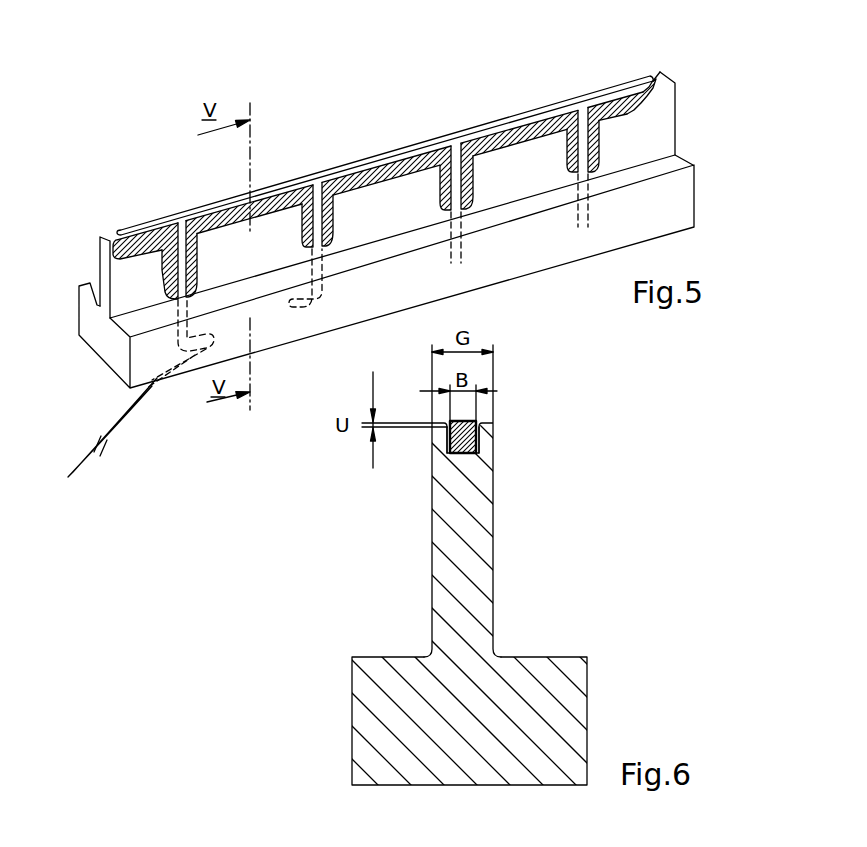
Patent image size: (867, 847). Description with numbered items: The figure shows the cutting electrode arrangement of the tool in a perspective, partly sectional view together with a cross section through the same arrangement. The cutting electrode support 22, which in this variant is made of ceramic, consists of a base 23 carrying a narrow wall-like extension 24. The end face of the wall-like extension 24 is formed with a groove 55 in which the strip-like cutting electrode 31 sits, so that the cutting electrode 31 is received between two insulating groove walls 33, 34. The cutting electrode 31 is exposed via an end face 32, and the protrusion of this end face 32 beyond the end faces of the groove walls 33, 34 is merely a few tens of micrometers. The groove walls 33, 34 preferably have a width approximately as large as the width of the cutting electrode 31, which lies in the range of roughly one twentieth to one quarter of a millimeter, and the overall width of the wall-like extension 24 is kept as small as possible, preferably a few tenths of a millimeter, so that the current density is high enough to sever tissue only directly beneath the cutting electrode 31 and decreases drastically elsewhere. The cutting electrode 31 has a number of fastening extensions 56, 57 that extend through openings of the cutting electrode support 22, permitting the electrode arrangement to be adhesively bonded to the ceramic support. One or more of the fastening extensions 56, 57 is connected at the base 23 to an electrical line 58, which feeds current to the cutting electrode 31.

In FIG. 5, the cutting electrode support 22 is at (697, 82).
In FIG. 6, the cutting electrode support 22 is at (603, 549).
In FIG. 5, the base 23 is at (386, 271).
In FIG. 6, the base 23 is at (520, 678).
In FIG. 5, the wall-like extension 24 is at (647, 132).
In FIG. 6, the wall-like extension 24 is at (463, 560).
In FIG. 5, the cutting electrode 31 is at (528, 125).
In FIG. 6, the cutting electrode 31 is at (465, 444).
In FIG. 6, the end face 32 is at (463, 420).
In FIG. 6, the groove wall 33 is at (440, 442).
In FIG. 6, the groove wall 34 is at (485, 431).
In FIG. 5, the groove 55 is at (660, 72).
In FIG. 5, the fastening extension 56 is at (186, 262).
In FIG. 5, the fastening extension 57 is at (317, 225).
In FIG. 5, the electrical line 58 is at (130, 417).